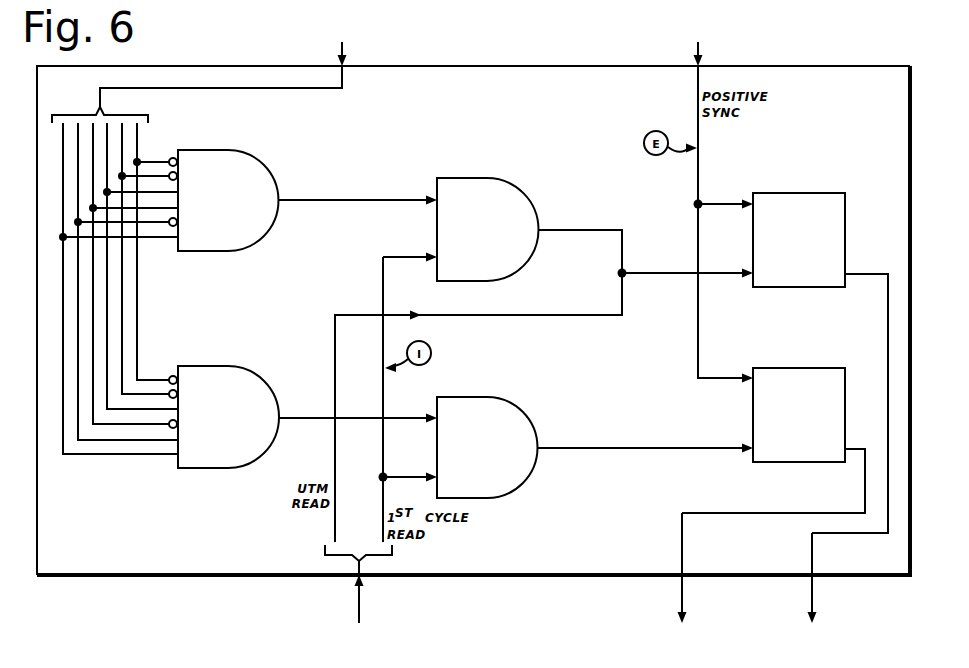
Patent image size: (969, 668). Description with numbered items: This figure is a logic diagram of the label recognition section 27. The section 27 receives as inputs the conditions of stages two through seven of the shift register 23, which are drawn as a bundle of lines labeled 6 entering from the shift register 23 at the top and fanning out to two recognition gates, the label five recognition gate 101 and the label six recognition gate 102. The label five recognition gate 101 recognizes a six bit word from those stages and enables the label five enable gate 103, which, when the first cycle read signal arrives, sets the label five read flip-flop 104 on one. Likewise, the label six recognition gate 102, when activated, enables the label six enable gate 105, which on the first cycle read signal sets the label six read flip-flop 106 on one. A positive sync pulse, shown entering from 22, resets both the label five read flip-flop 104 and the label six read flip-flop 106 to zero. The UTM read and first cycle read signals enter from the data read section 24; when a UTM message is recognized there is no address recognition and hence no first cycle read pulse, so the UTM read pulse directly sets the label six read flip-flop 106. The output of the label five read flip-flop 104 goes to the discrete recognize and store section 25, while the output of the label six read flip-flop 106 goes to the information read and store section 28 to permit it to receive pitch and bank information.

The stage of the shift register 6 is at (208, 92).
The label recognition section 27 is at (868, 58).
The label five recognition gate 101 is at (245, 366).
The label six recognition gate 102 is at (247, 150).
The label five enable gate 103 is at (510, 398).
The label five read flip-flop 104 is at (799, 368).
The label six enable gate 105 is at (506, 178).
The label six read flip-flop 106 is at (797, 193).
The positive sync input from 22 is at (695, 46).
The shift register 23 is at (341, 46).
The data read section 24 is at (358, 610).
The discrete recognize and store section 25 is at (682, 579).
The information read and store section 28 is at (812, 589).